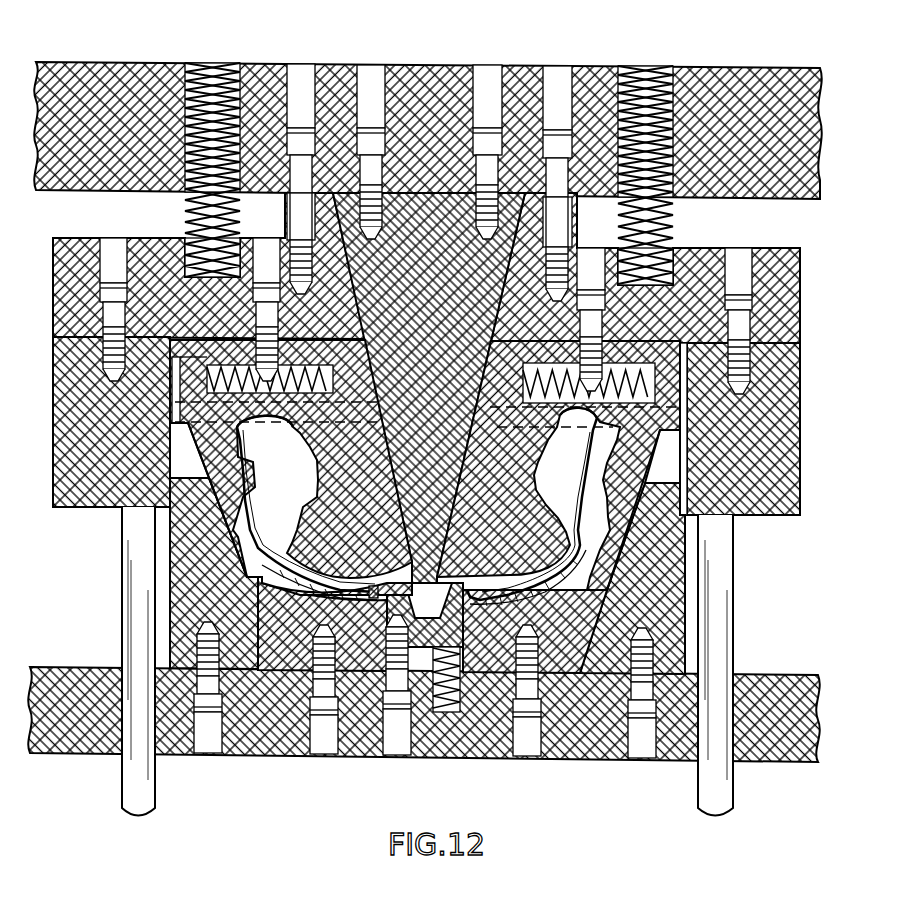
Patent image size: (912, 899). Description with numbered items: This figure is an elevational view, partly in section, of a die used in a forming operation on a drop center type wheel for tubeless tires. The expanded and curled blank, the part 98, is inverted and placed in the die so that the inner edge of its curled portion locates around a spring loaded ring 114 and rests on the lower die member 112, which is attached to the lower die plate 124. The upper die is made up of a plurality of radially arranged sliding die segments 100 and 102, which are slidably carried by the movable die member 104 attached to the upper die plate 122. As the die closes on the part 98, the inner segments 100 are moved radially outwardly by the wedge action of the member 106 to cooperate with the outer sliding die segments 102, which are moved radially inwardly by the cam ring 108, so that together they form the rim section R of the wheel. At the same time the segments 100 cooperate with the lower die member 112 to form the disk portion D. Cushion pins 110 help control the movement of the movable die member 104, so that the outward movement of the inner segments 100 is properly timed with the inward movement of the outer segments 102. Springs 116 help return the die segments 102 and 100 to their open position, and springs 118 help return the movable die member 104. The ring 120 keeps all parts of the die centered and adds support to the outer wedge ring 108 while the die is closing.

The upper die plate 122 is at (65, 64).
The springs 118 is at (197, 213).
The movable die member 104 is at (65, 262).
The ring 120 is at (110, 492).
The springs 116 is at (245, 367).
The member 106 is at (429, 388).
The sliding die segments 100 is at (392, 511).
The sliding die segments 102 is at (251, 457).
The part 98 is at (240, 530).
The rim section R is at (585, 535).
The cam ring 108 is at (190, 582).
The spring loaded ring 114 is at (427, 645).
The disk portion D is at (457, 590).
The lower die plate 124 is at (238, 745).
The lower die member 112 is at (300, 748).
The cushion pins 110 is at (135, 785).